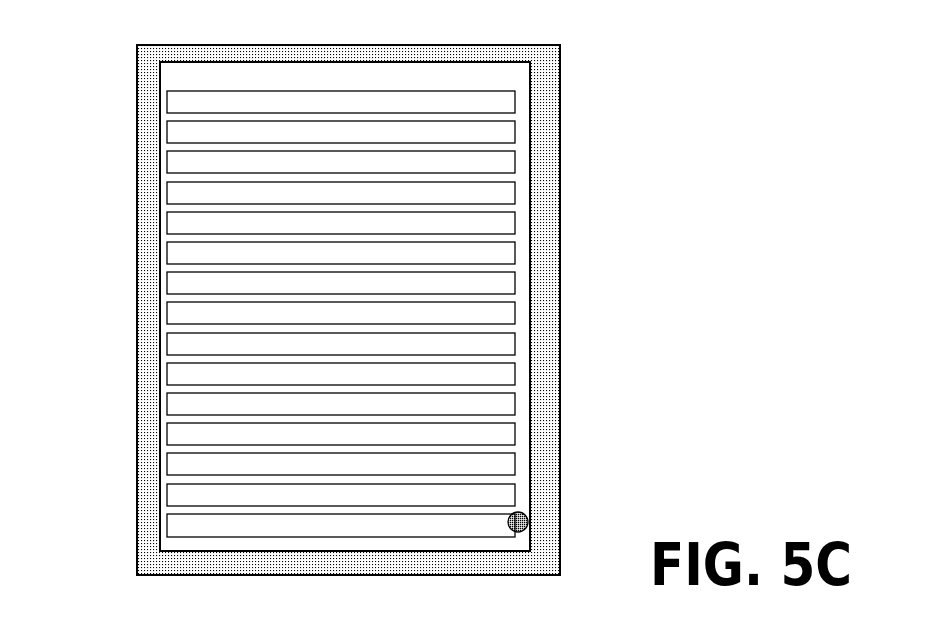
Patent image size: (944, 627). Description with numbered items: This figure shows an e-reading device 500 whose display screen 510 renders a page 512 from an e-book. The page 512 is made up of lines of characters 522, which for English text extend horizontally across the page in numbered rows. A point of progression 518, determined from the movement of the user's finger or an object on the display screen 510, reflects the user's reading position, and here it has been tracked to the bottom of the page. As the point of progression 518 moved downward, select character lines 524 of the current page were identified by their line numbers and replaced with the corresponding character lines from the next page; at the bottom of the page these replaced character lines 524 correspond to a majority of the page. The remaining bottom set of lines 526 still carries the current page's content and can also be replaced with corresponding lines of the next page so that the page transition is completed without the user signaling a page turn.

The e-reading device 500 is at (137, 125).
The display screen 510 is at (158, 250).
The page 512 is at (168, 322).
The lines of characters 522 is at (207, 365).
The character lines 524 is at (361, 268).
The bottom set of lines 526 is at (520, 526).
The point of progression 518 is at (530, 520).